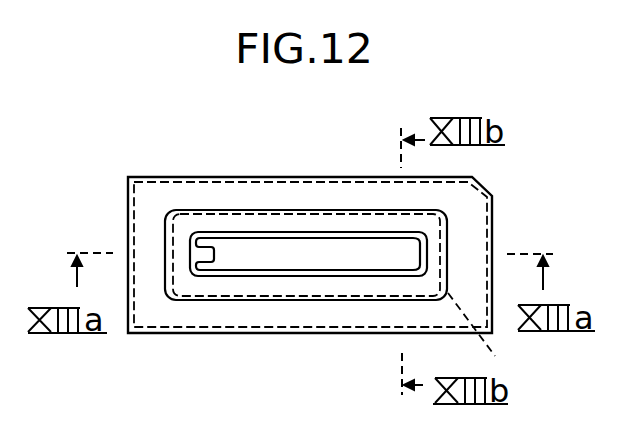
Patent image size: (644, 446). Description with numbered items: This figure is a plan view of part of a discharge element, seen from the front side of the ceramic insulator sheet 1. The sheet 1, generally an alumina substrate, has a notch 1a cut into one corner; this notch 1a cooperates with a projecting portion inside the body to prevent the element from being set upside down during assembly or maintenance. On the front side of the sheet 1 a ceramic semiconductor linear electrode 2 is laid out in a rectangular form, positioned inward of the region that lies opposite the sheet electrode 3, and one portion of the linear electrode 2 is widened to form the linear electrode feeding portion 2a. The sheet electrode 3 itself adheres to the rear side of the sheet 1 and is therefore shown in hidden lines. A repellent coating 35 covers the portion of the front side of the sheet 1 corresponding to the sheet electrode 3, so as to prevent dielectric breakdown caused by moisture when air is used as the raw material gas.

The ceramic insulator sheet 1 is at (428, 213).
The notch 1a is at (490, 183).
The linear electrode 2 is at (306, 203).
The linear electrode feeding portion 2a is at (207, 242).
The sheet electrode 3 is at (479, 334).
The repellent coating 35 is at (348, 178).